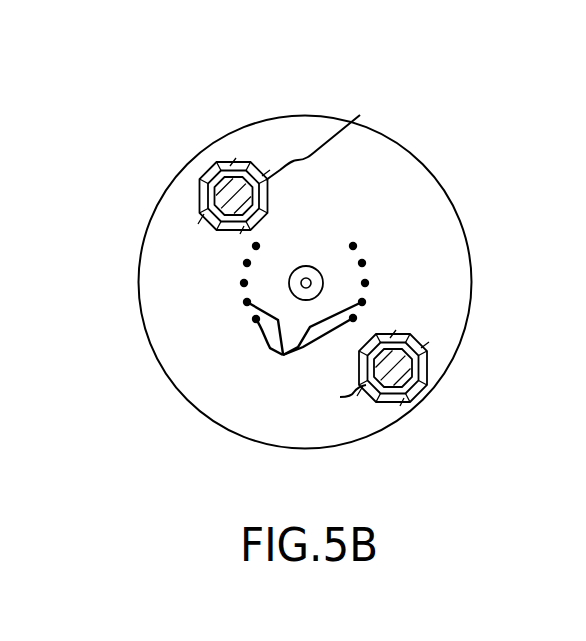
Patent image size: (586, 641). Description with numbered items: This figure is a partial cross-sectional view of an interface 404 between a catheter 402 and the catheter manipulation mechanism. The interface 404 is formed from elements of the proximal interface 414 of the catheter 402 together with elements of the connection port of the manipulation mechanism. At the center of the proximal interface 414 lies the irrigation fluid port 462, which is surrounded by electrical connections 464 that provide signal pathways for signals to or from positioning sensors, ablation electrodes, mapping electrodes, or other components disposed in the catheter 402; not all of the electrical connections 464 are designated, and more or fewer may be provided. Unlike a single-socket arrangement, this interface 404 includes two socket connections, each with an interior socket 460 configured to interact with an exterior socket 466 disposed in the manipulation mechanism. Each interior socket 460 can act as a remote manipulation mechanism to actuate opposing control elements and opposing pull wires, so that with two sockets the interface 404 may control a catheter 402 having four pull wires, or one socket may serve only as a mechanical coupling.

The catheter 402 is at (124, 158).
The interface 404 is at (317, 93).
The proximal interface 414 is at (278, 84).
The interior socket 460 is at (412, 303).
The irrigation fluid port 462 is at (311, 266).
The electrical connections 464 is at (304, 314).
The exterior socket 466 is at (329, 254).